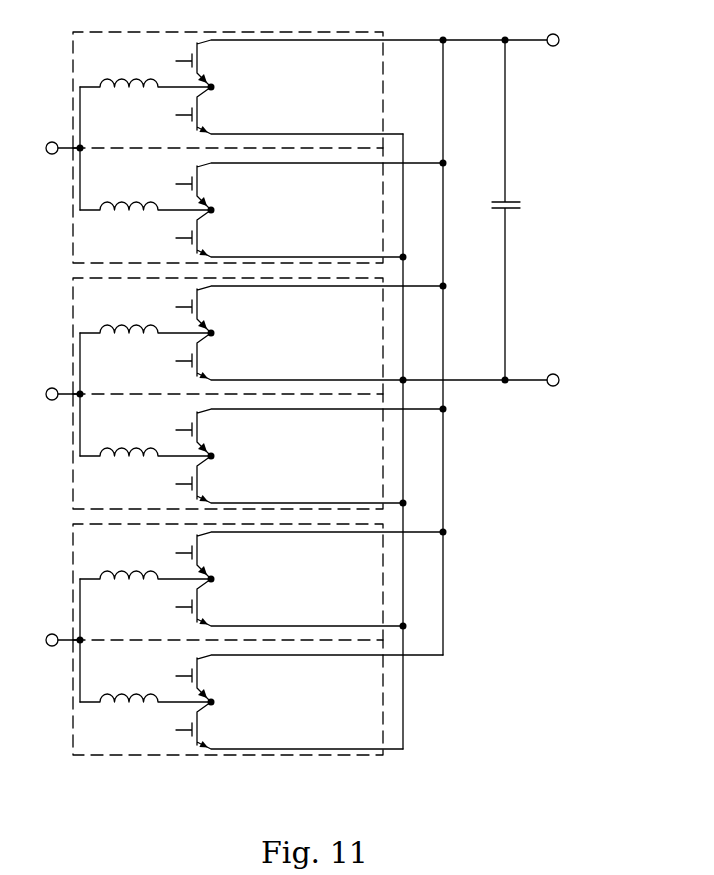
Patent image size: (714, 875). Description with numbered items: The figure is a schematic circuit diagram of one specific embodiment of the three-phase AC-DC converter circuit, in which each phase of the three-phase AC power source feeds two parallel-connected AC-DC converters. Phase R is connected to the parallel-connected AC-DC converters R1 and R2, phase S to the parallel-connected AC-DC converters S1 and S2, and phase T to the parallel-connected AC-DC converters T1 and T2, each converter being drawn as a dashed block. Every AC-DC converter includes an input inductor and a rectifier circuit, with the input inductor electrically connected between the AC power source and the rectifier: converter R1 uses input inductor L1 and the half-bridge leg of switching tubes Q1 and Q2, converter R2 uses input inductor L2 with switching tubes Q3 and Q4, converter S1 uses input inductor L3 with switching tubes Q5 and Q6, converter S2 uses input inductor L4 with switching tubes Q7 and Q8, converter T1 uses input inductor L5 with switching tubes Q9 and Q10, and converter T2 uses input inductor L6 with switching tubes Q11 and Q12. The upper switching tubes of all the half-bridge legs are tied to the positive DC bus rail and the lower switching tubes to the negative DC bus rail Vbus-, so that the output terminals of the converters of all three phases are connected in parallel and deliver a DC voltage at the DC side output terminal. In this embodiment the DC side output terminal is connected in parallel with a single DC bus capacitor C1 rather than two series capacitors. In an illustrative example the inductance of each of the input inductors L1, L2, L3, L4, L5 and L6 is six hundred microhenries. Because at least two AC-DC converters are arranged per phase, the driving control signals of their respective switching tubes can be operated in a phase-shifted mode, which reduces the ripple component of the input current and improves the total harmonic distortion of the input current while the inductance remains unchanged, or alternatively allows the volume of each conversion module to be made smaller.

The switching tube Q1 is at (361, 63).
The switching tube Q2 is at (289, 110).
The switching tube Q3 is at (309, 186).
The switching tube Q4 is at (289, 233).
The switching tube Q5 is at (309, 309).
The switching tube Q6 is at (361, 356).
The switching tube Q7 is at (309, 432).
The switching tube Q8 is at (289, 479).
The switching tube Q9 is at (309, 555).
The switching tube Q10 is at (289, 602).
The switching tube Q11 is at (309, 678).
The switching tube Q12 is at (289, 725).
The input inductor L1 is at (145, 72).
The input inductor L2 is at (145, 195).
The input inductor L3 is at (145, 318).
The input inductor L4 is at (145, 441).
The input inductor L5 is at (145, 564).
The input inductor L6 is at (145, 687).
The DC bus capacitor C1 is at (492, 210).
The AC-DC converter R1 is at (228, 90).
The AC-DC converter R2 is at (228, 205).
The AC-DC converter S1 is at (228, 336).
The AC-DC converter S2 is at (228, 451).
The AC-DC converter T1 is at (228, 582).
The AC-DC converter T2 is at (228, 697).
The phase R is at (54, 148).
The phase S is at (54, 394).
The phase T is at (53, 640).
The negative DC bus terminal Vbus- is at (580, 380).